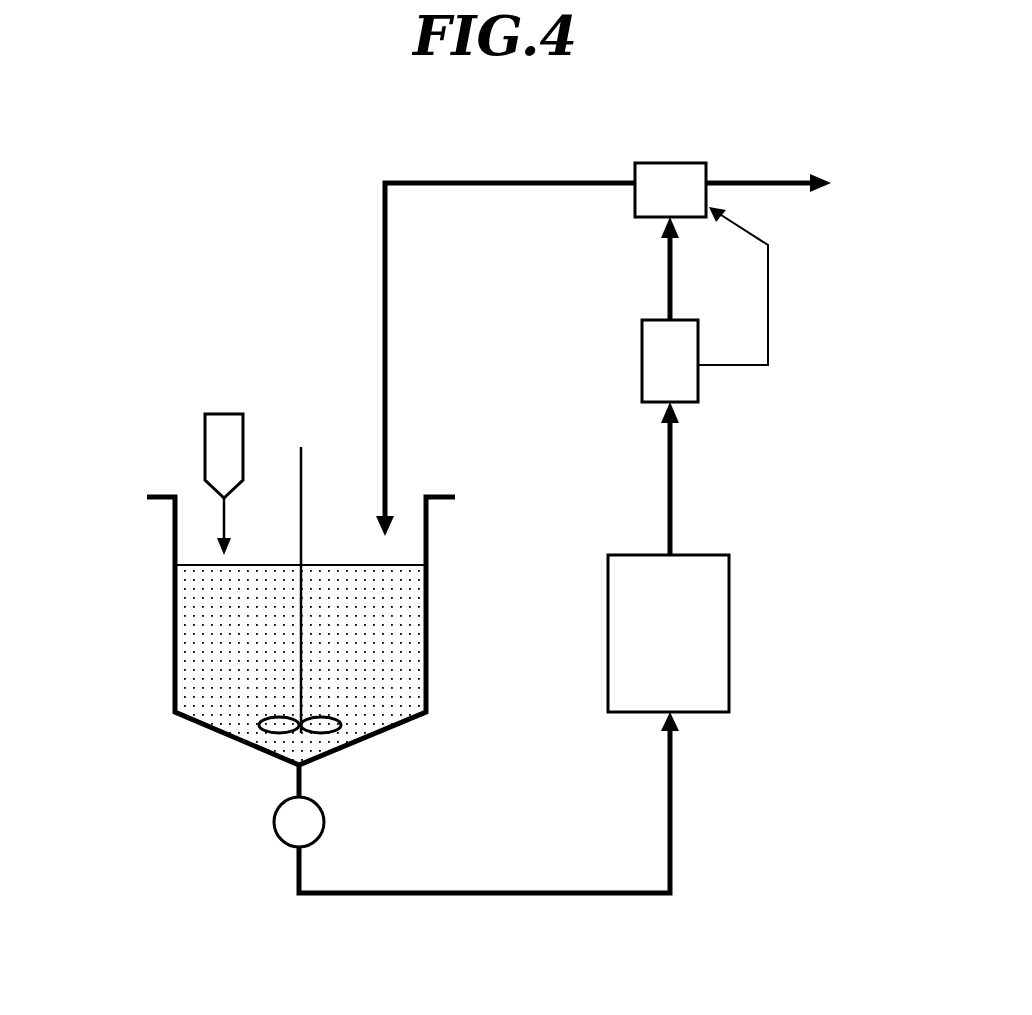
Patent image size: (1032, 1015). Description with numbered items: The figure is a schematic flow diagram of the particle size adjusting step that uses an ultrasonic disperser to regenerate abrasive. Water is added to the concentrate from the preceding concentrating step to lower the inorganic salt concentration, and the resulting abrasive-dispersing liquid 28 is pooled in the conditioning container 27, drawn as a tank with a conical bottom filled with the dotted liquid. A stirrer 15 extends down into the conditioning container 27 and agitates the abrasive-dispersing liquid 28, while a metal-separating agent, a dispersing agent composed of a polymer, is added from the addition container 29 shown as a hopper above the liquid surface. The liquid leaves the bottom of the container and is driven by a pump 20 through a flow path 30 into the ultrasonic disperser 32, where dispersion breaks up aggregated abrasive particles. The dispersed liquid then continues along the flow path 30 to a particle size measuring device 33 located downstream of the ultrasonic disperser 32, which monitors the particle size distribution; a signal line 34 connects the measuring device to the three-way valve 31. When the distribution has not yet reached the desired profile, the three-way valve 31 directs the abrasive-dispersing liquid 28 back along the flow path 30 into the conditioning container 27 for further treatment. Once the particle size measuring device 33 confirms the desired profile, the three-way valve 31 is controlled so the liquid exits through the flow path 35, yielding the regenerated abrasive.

The stirrer 15 is at (303, 481).
The pump 20 is at (325, 810).
The conditioning container 27 is at (212, 732).
The abrasive-dispersing liquid 28 is at (217, 598).
The addition container 29 is at (228, 433).
The flow path 30 is at (462, 890).
The three-way valve 31 is at (678, 180).
The ultrasonic disperser 32 is at (632, 628).
The particle size measuring device 33 is at (663, 362).
The return line 34 is at (768, 305).
The flow path 35 is at (755, 180).